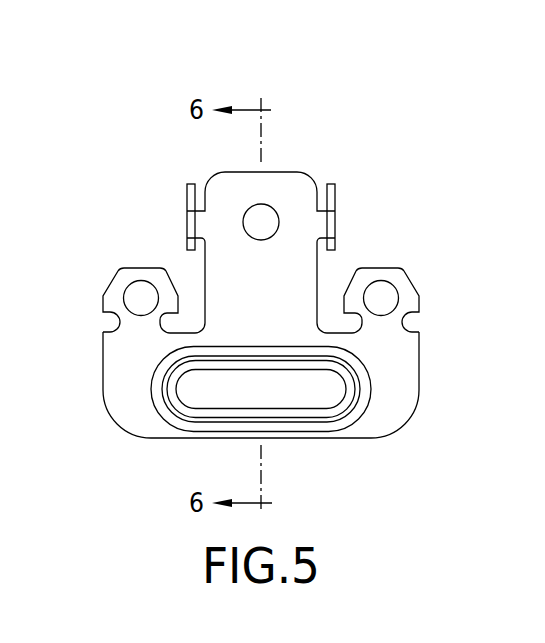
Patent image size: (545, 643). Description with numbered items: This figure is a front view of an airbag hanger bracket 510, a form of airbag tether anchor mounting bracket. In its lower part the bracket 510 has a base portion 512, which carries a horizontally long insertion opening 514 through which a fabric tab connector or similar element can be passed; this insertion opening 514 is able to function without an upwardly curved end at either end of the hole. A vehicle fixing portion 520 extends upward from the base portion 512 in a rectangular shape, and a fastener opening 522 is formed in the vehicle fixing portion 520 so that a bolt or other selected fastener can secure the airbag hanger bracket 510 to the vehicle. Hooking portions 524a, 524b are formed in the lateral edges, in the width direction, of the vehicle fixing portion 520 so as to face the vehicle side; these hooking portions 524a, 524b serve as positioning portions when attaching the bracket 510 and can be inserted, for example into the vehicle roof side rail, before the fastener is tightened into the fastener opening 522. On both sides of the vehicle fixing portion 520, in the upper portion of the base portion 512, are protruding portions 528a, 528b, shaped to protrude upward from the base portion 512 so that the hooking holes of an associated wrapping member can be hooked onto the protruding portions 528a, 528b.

The airbag hanger bracket 510 is at (431, 116).
The base portion 512 is at (130, 396).
The insertion opening 514 is at (223, 395).
The vehicle fixing portion 520 is at (228, 192).
The fastener opening 522 is at (270, 204).
The hooking portion 524a is at (187, 197).
The hooking portion 524b is at (335, 197).
The protruding portion 528a is at (110, 284).
The protruding portion 528b is at (412, 284).